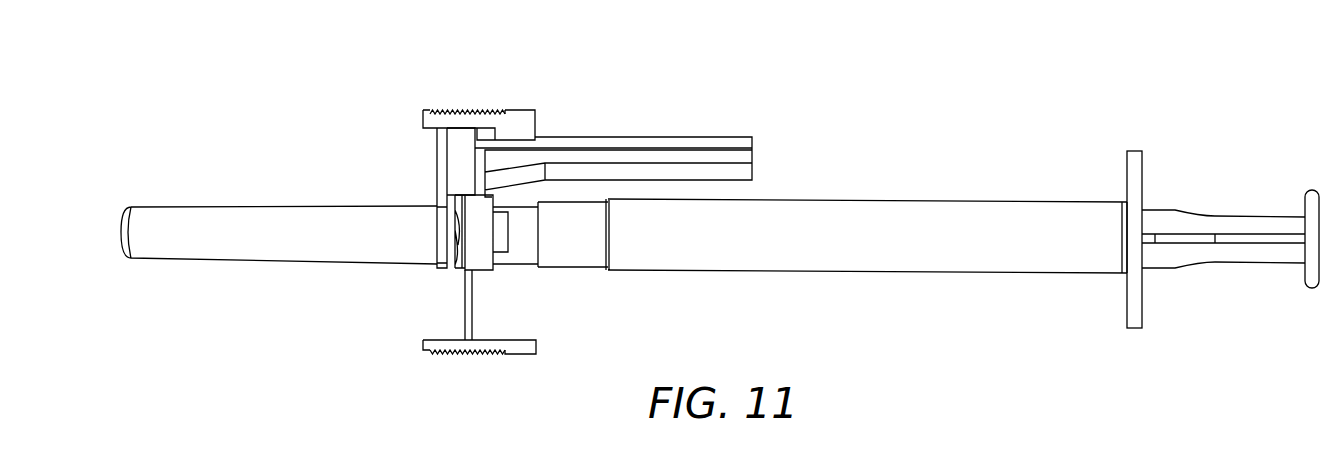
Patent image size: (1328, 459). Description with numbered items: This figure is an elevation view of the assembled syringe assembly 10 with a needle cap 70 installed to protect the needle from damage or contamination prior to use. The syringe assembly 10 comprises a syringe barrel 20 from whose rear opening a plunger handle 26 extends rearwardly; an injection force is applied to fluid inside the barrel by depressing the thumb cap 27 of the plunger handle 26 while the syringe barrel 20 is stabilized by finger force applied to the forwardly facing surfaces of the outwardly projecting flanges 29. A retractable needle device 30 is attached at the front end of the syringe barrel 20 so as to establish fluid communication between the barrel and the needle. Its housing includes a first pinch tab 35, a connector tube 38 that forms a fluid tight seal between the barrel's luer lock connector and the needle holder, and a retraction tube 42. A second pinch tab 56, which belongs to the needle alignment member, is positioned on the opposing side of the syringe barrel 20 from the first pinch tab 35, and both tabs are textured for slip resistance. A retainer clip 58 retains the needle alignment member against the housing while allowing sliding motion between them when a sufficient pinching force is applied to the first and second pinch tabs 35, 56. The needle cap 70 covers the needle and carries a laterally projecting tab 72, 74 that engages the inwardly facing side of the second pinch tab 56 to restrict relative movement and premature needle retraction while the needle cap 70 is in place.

The syringe assembly 10 is at (225, 61).
The syringe barrel 20 is at (948, 143).
The plunger handle 26 is at (1178, 220).
The thumb cap 27 is at (1312, 283).
The outwardly projecting flanges 29 is at (1138, 150).
The retractable needle device 30 is at (472, 372).
The first pinch tab 35 is at (519, 126).
The connector tube 38 is at (525, 248).
The retraction tube 42 is at (694, 143).
The second pinch tab 56 is at (432, 350).
The retainer clip 58 is at (462, 268).
The needle cap 70 is at (217, 217).
The laterally projecting tab 72 is at (437, 180).
The laterally projecting tab 74 is at (437, 135).